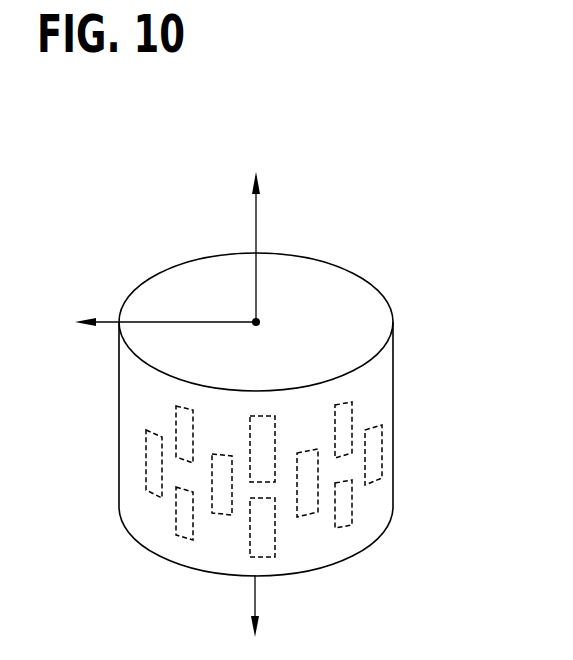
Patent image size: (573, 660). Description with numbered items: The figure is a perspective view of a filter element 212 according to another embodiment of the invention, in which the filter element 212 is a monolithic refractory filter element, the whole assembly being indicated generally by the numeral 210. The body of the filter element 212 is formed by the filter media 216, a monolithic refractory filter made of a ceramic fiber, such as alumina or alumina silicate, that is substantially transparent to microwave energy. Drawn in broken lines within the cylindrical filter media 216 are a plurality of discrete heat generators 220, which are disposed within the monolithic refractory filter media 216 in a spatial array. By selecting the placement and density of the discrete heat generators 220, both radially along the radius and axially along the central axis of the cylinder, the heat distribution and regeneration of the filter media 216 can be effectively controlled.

The filter element 210 is at (166, 222).
The filter element 212 is at (377, 312).
The filter media 216 is at (382, 385).
The discrete heat generators 220 is at (300, 513).